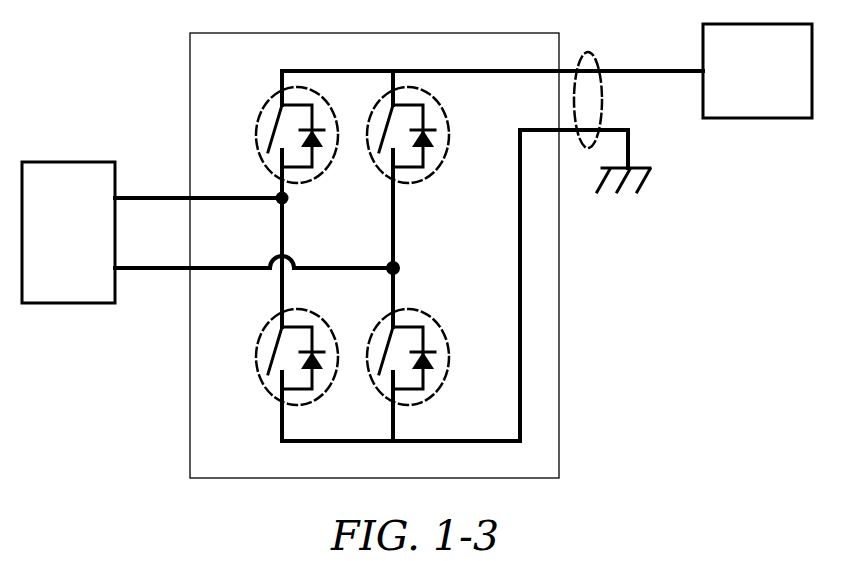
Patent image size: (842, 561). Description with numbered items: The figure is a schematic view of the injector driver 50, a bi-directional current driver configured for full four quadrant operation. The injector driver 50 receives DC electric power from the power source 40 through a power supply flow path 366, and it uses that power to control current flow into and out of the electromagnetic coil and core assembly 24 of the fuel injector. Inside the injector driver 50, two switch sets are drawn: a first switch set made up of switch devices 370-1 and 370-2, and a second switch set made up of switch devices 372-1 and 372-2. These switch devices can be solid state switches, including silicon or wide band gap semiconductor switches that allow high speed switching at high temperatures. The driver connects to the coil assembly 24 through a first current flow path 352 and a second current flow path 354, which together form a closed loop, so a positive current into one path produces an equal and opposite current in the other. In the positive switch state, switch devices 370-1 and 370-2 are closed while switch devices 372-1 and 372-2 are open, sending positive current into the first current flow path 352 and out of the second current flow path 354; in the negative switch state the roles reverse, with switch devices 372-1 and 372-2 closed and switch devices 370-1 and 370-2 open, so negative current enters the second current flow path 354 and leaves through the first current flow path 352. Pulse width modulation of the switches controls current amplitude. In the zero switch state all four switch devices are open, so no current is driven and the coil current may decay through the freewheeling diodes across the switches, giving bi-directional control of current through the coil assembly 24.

The electromagnetic coil and core assembly 24 is at (68, 232).
The power source 40 is at (757, 71).
The injector driver 50 is at (374, 255).
The first current flow path 352 is at (198, 182).
The second current flow path 354 is at (254, 253).
The power supply flow path 366 is at (601, 60).
The switch device 370-1 is at (269, 133).
The switch device 370-2 is at (439, 357).
The switch device 372-1 is at (439, 133).
The switch device 372-2 is at (269, 357).